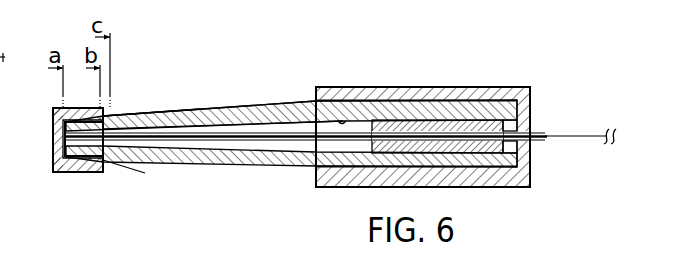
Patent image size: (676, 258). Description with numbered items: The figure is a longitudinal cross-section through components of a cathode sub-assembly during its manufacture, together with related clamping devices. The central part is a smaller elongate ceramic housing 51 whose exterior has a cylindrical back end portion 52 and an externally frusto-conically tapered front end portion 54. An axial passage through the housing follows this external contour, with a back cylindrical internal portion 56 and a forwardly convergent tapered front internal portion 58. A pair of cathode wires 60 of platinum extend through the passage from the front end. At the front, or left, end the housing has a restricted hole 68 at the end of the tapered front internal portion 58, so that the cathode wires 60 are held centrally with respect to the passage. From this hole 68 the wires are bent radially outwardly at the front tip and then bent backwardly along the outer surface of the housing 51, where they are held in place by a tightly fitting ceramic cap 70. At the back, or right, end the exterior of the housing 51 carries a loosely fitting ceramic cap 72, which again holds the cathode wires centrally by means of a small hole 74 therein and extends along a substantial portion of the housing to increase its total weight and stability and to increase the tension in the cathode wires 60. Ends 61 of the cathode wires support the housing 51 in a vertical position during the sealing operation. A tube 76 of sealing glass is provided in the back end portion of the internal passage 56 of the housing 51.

The ceramic housing 51 is at (265, 107).
The cylindrical back end portion 52 is at (443, 100).
The externally frusto-conically tapered front end portion 54 is at (220, 108).
The back cylindrical internal portion 56 is at (533, 103).
The forwardly convergent tapered front internal portion 58 is at (342, 120).
The cathode wires 60 is at (103, 118).
The ends of the cathode wires 61 is at (608, 134).
The restricted hole 68 is at (92, 144).
The tightly fitting ceramic cap 70 is at (53, 122).
The loosely fitting ceramic cap 72 is at (407, 97).
The small hole 74 is at (543, 134).
The tube of sealing glass 76 is at (470, 112).